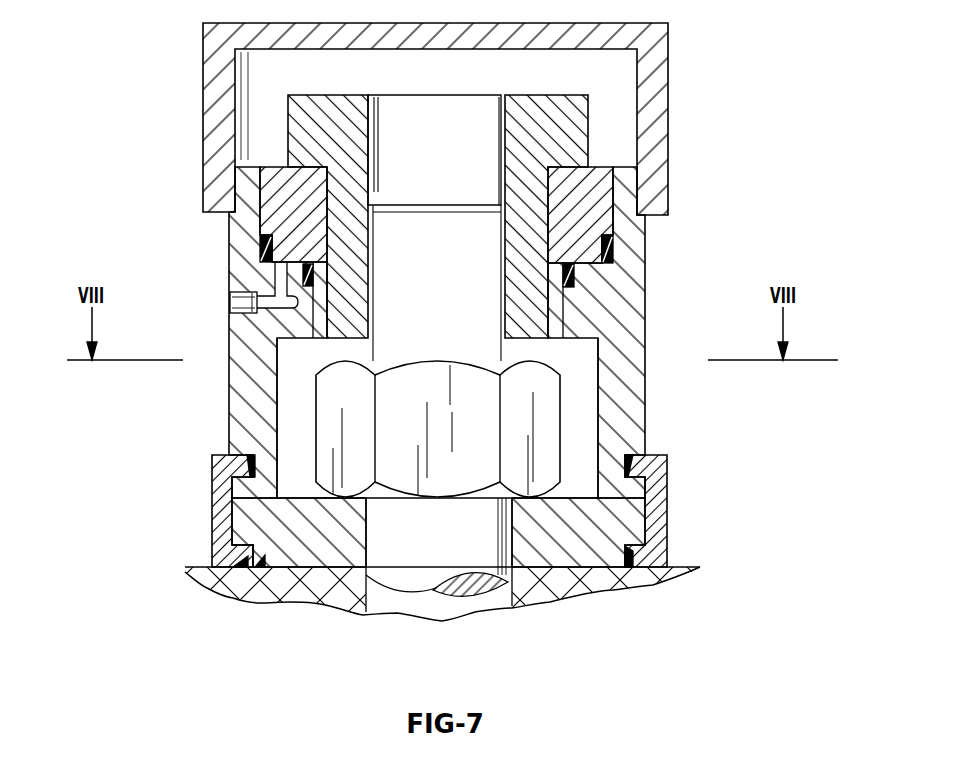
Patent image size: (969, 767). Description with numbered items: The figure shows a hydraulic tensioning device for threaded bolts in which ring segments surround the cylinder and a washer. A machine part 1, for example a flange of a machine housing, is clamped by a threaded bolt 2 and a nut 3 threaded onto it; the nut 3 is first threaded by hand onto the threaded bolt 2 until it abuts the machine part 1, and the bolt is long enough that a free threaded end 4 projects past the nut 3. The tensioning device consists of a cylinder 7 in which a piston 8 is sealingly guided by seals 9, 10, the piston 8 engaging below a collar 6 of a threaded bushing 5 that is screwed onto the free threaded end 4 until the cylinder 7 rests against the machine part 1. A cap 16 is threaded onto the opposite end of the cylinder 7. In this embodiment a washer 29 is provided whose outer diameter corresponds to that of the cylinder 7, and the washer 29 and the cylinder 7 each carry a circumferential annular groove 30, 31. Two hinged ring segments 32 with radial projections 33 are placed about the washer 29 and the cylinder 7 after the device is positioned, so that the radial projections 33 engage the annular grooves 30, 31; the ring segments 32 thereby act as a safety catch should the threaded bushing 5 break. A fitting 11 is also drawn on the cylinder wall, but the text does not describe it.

The machine part 1 is at (615, 587).
The threaded bolt 2 is at (470, 548).
The nut 3 is at (338, 389).
The free threaded end 4 is at (470, 293).
The threaded bushing 5 is at (540, 228).
The collar 6 is at (572, 132).
The cylinder 7 is at (620, 388).
The piston 8 is at (305, 207).
The seal 9 is at (268, 258).
The seal 10 is at (308, 277).
The lubrication fitting 11 is at (243, 303).
The cap 16 is at (655, 54).
The washer 29 is at (335, 545).
The annular groove 30 is at (262, 555).
The annular groove 31 is at (268, 462).
The ring segment 32 is at (213, 510).
The radial projection 33 is at (215, 456).